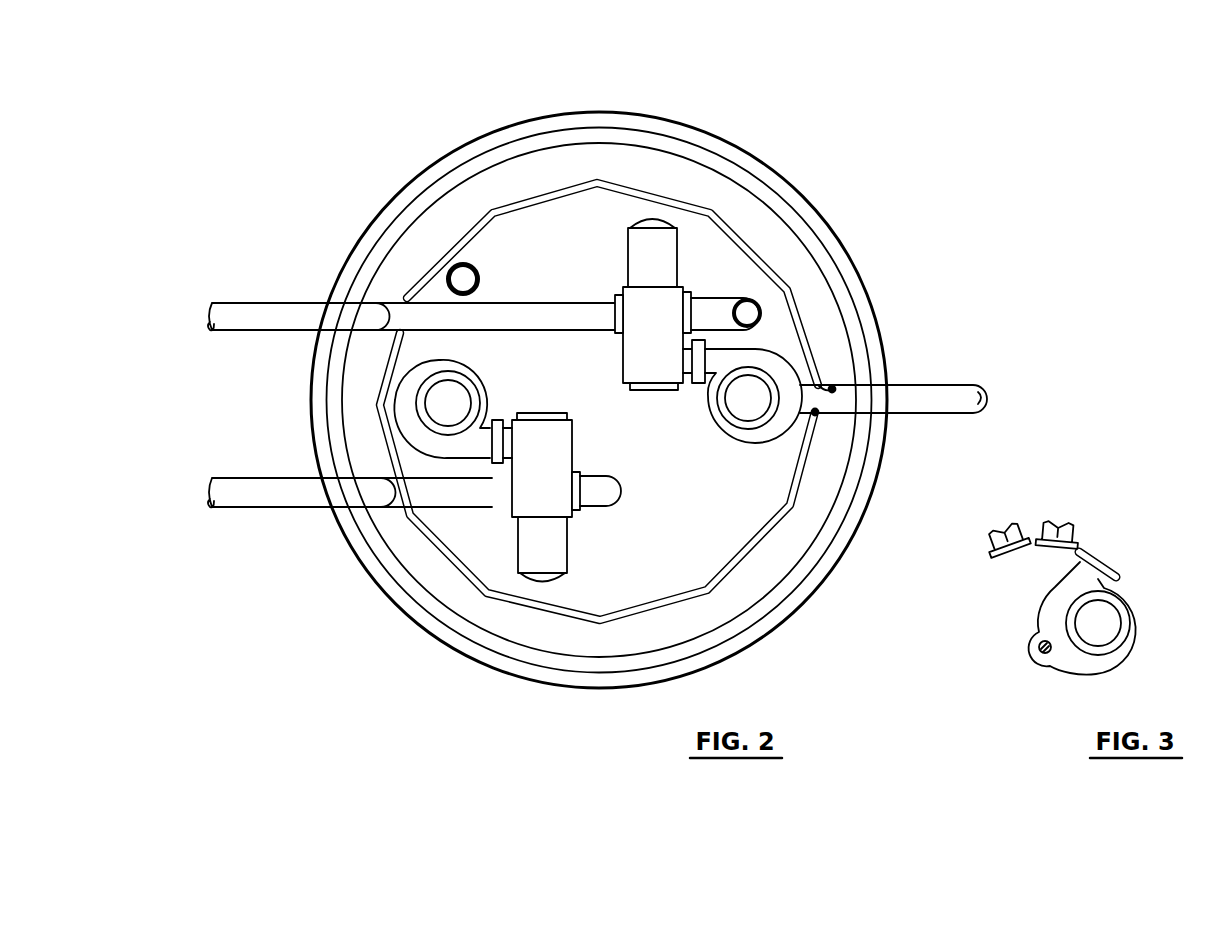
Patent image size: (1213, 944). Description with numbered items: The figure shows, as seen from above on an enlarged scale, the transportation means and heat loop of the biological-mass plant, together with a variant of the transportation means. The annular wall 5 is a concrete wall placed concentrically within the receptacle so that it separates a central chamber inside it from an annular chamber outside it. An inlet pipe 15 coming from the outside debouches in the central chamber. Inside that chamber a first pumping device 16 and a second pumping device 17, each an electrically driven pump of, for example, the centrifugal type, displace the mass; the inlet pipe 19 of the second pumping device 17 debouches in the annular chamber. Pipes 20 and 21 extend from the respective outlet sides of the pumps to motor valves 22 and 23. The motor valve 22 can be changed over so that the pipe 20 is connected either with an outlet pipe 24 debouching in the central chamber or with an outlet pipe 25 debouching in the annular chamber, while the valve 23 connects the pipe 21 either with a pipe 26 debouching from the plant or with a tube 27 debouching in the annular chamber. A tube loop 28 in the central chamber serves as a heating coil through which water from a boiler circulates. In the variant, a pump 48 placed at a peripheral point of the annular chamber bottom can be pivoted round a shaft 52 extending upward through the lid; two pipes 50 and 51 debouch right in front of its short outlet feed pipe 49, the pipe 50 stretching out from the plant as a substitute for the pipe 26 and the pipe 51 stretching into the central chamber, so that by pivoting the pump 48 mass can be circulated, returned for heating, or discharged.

In FIG. 2, the annular wall 5 is at (372, 234).
In FIG. 2, the inlet pipe 15 is at (445, 263).
In FIG. 2, the first pumping device 16 is at (438, 403).
In FIG. 2, the second pumping device 17 is at (750, 387).
In FIG. 2, the inlet pipe 19 is at (925, 392).
In FIG. 2, the pipe 20 is at (507, 472).
In FIG. 2, the pipe 21 is at (700, 316).
In FIG. 2, the motor valve 22 is at (538, 498).
In FIG. 2, the motor valve 23 is at (638, 300).
In FIG. 2, the outlet pipe 24 is at (595, 495).
In FIG. 2, the outlet pipe 25 is at (258, 488).
In FIG. 2, the pipe 26 is at (737, 302).
In FIG. 2, the tube 27 is at (253, 317).
In FIG. 2, the tube loop 28 is at (510, 210).
In FIG. 3, the pump 48 is at (1123, 617).
In FIG. 3, the short outlet feed pipe 49 is at (1100, 583).
In FIG. 3, the pipe 50 is at (1003, 527).
In FIG. 3, the pipe 51 is at (1062, 527).
In FIG. 3, the shaft 52 is at (1041, 653).